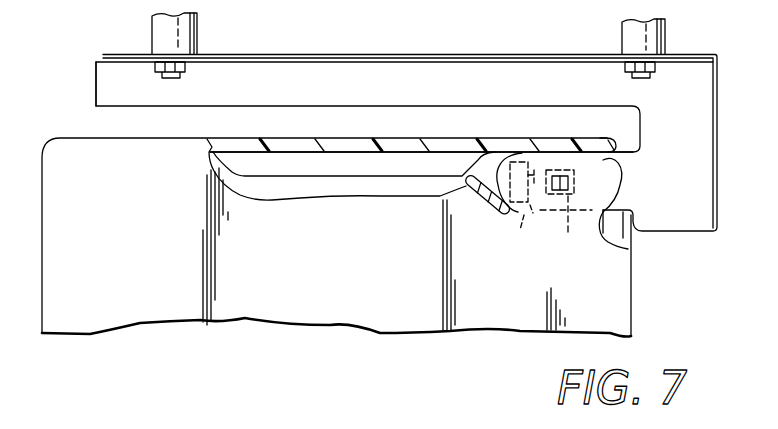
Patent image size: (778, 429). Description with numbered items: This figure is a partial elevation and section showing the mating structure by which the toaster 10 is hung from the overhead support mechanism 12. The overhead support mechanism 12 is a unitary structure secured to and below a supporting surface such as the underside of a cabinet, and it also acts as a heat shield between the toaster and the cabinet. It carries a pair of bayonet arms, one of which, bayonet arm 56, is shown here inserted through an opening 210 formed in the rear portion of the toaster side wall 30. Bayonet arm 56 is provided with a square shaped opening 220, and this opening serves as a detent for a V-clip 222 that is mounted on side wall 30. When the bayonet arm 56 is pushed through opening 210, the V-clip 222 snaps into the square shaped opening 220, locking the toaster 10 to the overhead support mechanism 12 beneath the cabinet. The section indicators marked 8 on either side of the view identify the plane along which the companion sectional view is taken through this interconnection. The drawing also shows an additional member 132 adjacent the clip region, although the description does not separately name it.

The toaster 10 is at (58, 126).
The overhead support mechanism 12 is at (483, 54).
The side wall 30 is at (622, 298).
The bayonet arm 56 is at (415, 156).
The bracket 132 is at (298, 143).
The opening 210 is at (630, 196).
The square shaped opening 220 is at (569, 200).
The V-clip 222 is at (534, 212).
The section line 8- 8 is at (68, 177).